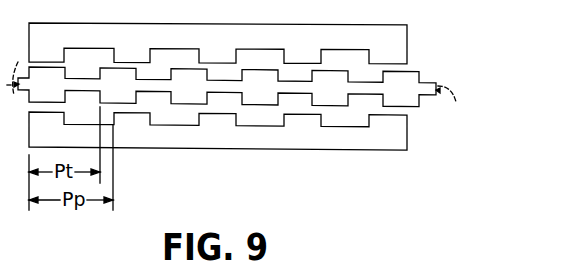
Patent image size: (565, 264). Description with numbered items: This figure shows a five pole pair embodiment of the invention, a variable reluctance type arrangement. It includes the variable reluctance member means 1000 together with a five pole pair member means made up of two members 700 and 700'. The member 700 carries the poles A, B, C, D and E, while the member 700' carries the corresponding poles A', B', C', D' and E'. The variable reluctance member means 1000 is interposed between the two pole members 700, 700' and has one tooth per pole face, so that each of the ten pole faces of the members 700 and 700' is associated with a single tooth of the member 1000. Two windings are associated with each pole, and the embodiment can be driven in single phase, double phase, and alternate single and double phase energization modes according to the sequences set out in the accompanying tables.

The pole member 700 is at (240, 44).
The pole member 700' is at (243, 131).
The variable reluctance member means 1000 is at (413, 78).